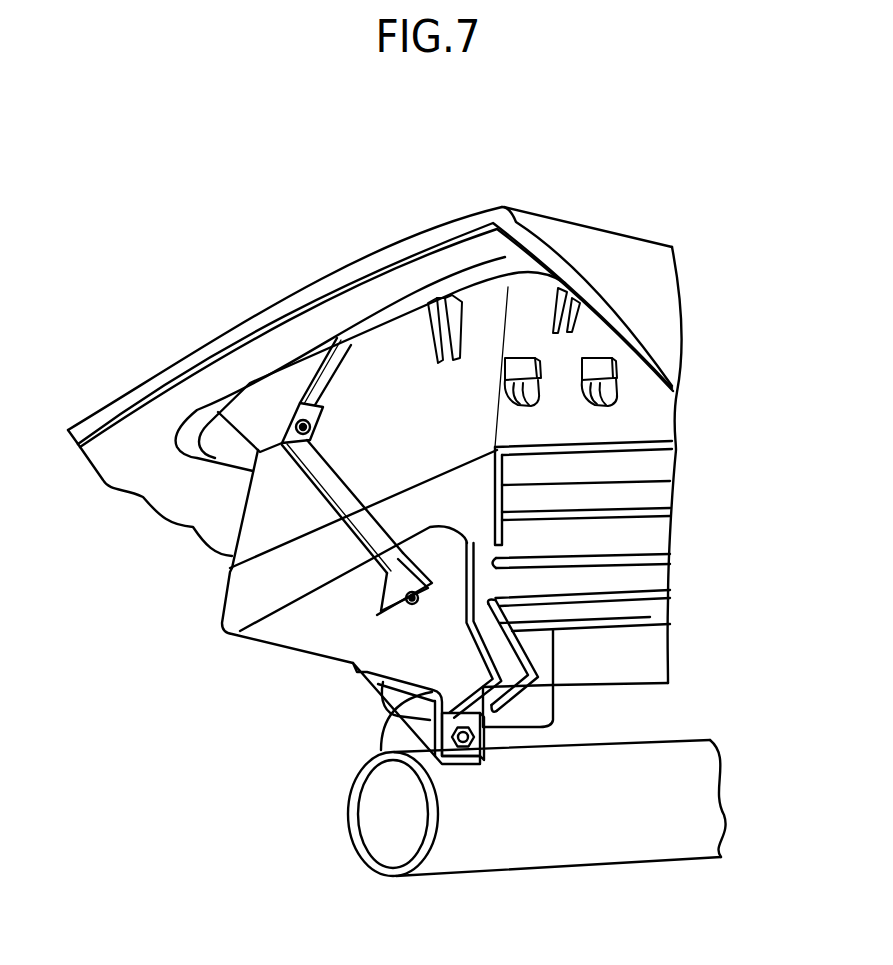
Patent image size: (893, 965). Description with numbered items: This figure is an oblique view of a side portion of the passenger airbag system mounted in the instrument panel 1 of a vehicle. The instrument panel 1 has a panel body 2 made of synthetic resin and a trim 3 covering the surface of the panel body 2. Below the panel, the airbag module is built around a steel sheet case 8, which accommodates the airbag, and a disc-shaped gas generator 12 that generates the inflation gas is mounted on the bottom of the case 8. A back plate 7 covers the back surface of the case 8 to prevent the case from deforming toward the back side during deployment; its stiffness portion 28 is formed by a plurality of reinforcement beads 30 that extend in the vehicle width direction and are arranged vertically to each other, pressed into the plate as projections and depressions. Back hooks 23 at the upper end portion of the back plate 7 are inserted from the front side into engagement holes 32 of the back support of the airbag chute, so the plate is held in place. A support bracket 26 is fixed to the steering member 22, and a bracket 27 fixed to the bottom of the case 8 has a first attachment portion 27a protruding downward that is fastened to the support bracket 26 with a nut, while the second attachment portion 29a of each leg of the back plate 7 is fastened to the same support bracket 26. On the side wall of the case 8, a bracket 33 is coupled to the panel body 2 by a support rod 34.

The instrument panel 1 is at (568, 220).
The panel body 2 is at (138, 428).
The trim 3 is at (212, 337).
The back plate 7 is at (466, 589).
The case 8 is at (660, 653).
The gas generator 12 is at (537, 712).
The steering member 22 is at (732, 792).
The back hook 23 is at (620, 398).
The support bracket 26 is at (407, 723).
The bracket 27 is at (367, 673).
The first attachment portion 27a is at (390, 730).
The stiffness portion 28 is at (645, 530).
The second attachment portion 29a is at (477, 755).
The reinforcement bead 30 is at (630, 505).
The engagement hole 32 is at (610, 374).
The bracket 33 is at (393, 618).
The support rod 34 is at (327, 468).